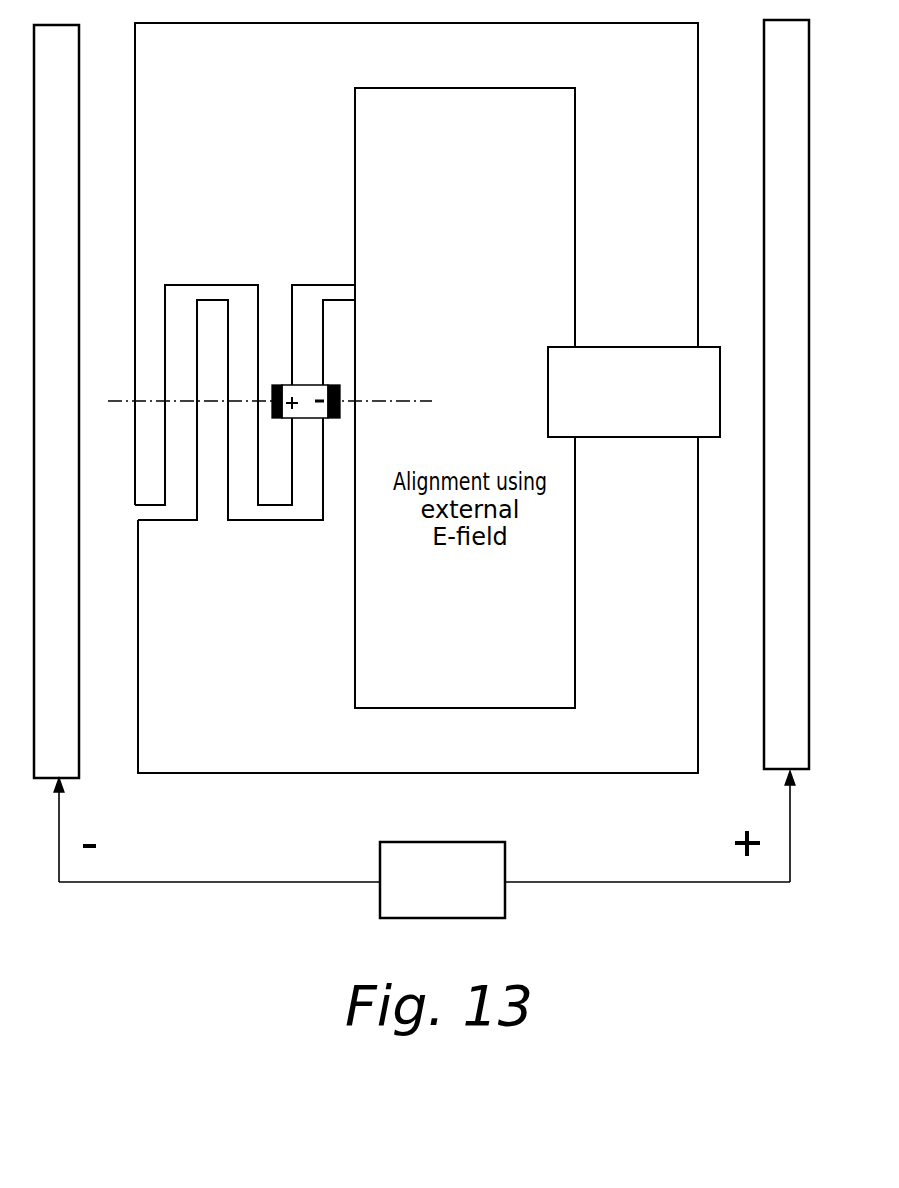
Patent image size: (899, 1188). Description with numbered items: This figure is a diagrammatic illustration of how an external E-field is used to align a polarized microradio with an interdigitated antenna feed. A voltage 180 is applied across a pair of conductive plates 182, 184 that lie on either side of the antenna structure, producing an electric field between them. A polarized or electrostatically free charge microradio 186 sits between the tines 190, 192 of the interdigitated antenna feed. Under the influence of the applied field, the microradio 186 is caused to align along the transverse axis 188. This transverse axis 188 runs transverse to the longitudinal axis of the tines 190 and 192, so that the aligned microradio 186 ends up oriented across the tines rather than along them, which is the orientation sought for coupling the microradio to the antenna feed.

The voltage 180 is at (470, 855).
The conductive plate 182 is at (68, 757).
The conductive plate 184 is at (768, 723).
The microradio 186 is at (313, 385).
The transverse axis 188 is at (410, 400).
The tine 190 is at (277, 300).
The tine 192 is at (338, 490).